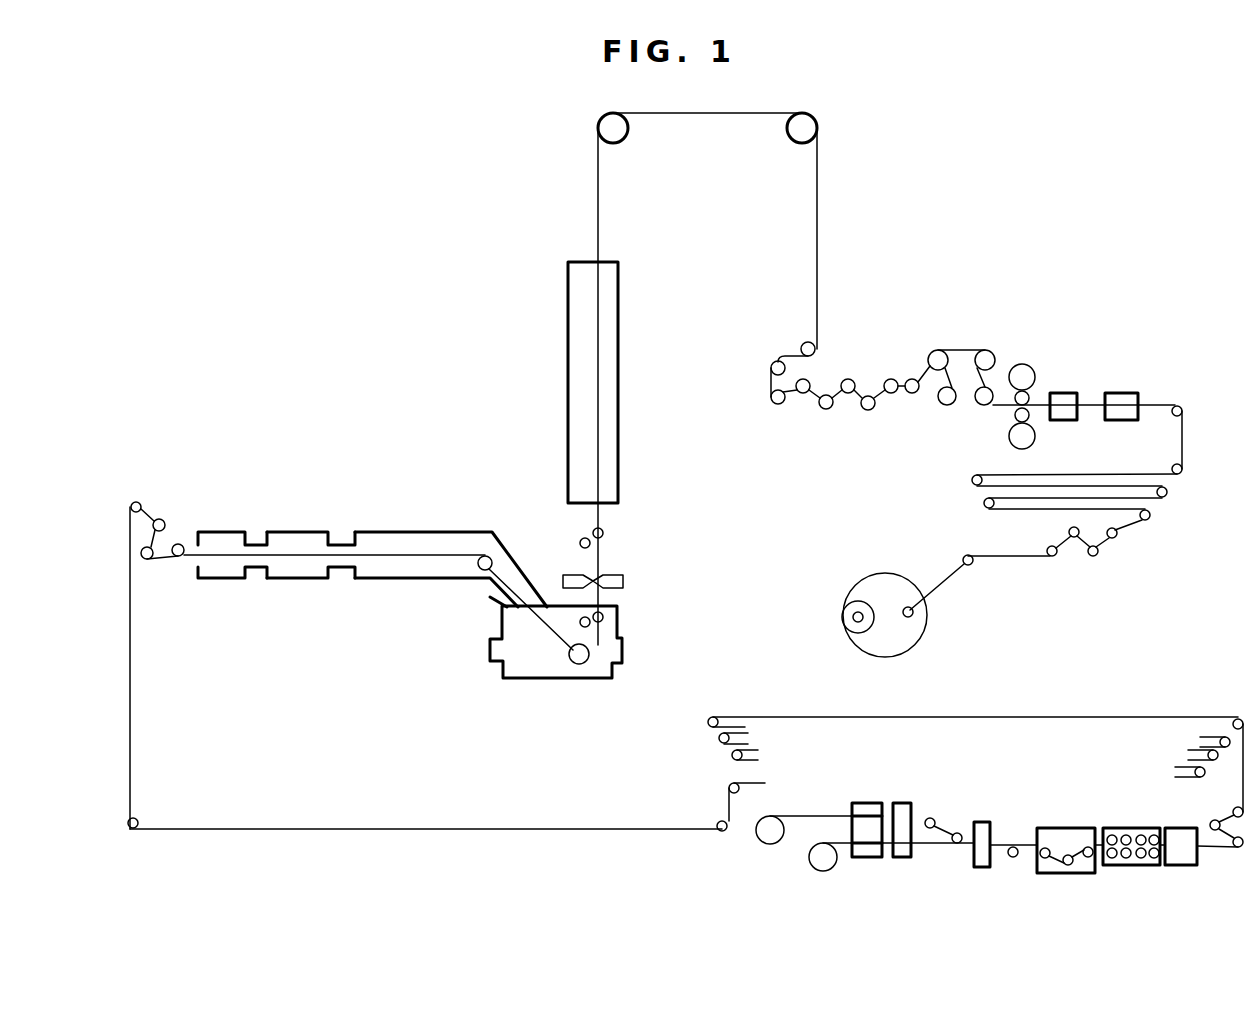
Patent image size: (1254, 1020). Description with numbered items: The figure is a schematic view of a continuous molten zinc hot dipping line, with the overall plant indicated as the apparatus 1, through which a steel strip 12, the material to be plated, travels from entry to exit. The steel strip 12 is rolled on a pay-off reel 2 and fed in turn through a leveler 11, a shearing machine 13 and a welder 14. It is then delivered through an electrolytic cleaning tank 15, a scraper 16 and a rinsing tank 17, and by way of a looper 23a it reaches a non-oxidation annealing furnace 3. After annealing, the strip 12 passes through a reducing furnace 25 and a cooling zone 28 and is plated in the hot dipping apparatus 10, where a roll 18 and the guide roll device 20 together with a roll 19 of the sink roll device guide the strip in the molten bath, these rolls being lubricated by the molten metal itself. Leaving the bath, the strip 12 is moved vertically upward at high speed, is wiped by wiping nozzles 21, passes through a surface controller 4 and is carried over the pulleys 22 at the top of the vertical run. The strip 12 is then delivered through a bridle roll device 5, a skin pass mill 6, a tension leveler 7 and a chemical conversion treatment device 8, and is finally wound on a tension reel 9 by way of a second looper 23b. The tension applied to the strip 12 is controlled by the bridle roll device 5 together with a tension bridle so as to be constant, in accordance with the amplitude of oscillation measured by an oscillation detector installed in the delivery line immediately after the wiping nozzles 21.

The processing apparatus 1 is at (1080, 875).
The pay-off reel 2 is at (770, 845).
The non-oxidation annealing furnace 3 is at (218, 530).
The surface controller 4 is at (620, 300).
The bridle roll device 5 is at (958, 350).
The skin pass mill 6 is at (1008, 437).
The tension leveler 7 is at (1063, 392).
The chemical conversion treatment device 8 is at (1118, 392).
The tension reel 9 is at (927, 625).
The hot dipping apparatus 10 is at (490, 658).
The leveler 11 is at (866, 801).
The steel strip 12 is at (337, 829).
The shearing machine 13 is at (903, 801).
The welder 14 is at (985, 820).
The electrolytic cleaning tank 15 is at (1065, 826).
The scraper 16 is at (1128, 826).
The rinsing tank 17 is at (1185, 867).
The guide roller 18 is at (493, 545).
The roll 19 is at (590, 655).
The guide roll device 20 is at (606, 619).
The wiping nozzles 21 is at (625, 581).
The pulley 22 is at (598, 128).
The looper 23a is at (1183, 747).
The looper 23b is at (1158, 508).
The reducing furnace 25 is at (305, 530).
The cooling zone 28 is at (420, 530).